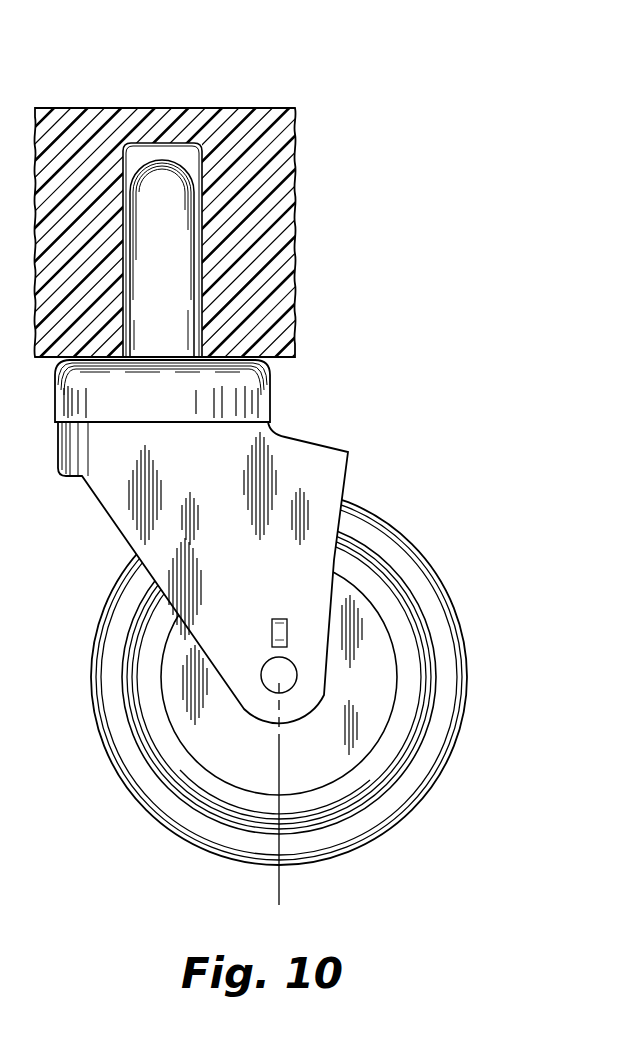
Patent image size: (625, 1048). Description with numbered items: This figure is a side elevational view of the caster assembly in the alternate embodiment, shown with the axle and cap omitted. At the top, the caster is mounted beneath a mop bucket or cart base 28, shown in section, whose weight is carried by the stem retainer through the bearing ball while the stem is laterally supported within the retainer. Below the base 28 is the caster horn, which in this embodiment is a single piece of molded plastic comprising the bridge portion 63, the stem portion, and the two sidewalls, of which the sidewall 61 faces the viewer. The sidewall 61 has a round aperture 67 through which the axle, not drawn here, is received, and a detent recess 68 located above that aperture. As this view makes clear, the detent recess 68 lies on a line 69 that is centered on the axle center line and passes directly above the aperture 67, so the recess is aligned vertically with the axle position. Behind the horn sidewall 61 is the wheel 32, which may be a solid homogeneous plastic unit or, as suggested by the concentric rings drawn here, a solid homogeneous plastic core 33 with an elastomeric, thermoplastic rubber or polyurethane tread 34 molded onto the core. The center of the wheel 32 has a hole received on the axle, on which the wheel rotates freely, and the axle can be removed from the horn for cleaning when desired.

The cart base 28 is at (70, 122).
The wheel 32 is at (415, 498).
The plastic core 33 is at (297, 787).
The tread 34 is at (374, 820).
The horn sidewall 61 is at (330, 472).
The bridge portion 63 is at (313, 440).
The round aperture 67 is at (268, 687).
The detent recess 68 is at (272, 632).
The line 69 is at (278, 892).